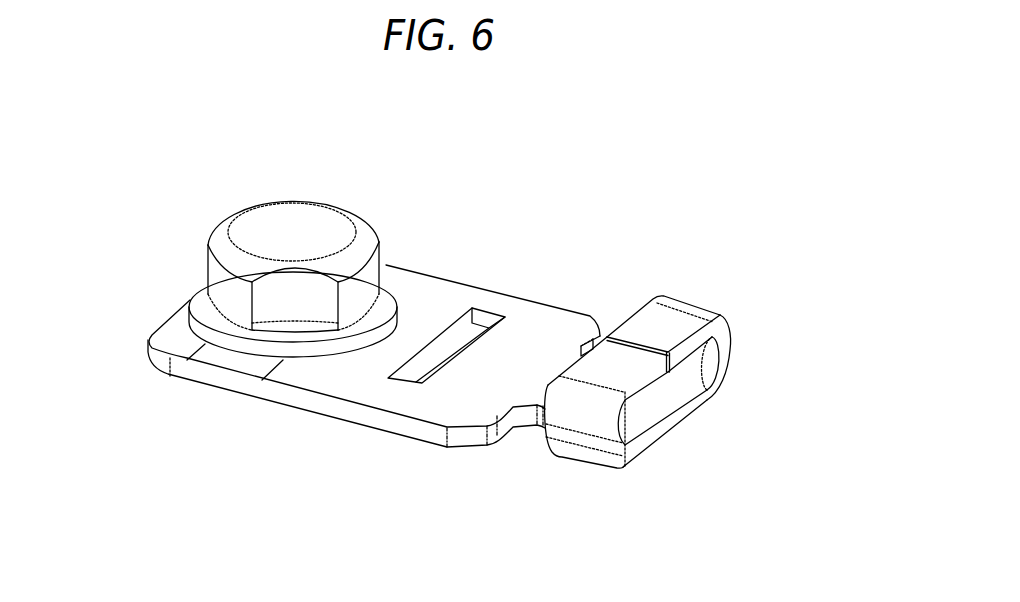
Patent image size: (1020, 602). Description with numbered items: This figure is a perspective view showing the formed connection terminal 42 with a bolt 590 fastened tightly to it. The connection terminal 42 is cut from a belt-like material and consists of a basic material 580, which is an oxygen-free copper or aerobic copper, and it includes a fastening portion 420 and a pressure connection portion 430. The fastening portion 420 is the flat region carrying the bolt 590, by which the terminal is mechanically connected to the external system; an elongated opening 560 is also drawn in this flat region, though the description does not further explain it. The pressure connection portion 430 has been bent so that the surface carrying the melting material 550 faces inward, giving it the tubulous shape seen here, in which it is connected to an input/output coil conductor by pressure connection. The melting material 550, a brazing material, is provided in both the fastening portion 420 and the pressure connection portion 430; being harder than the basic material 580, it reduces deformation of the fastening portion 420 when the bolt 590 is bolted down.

The connection terminal 42 is at (437, 354).
The fastening portion 420 is at (389, 271).
The pressure connection portion 430 is at (668, 323).
The melting material 550 is at (203, 352).
The slot 560 is at (421, 385).
The basic material 580 is at (372, 393).
The bolt 590 is at (297, 230).